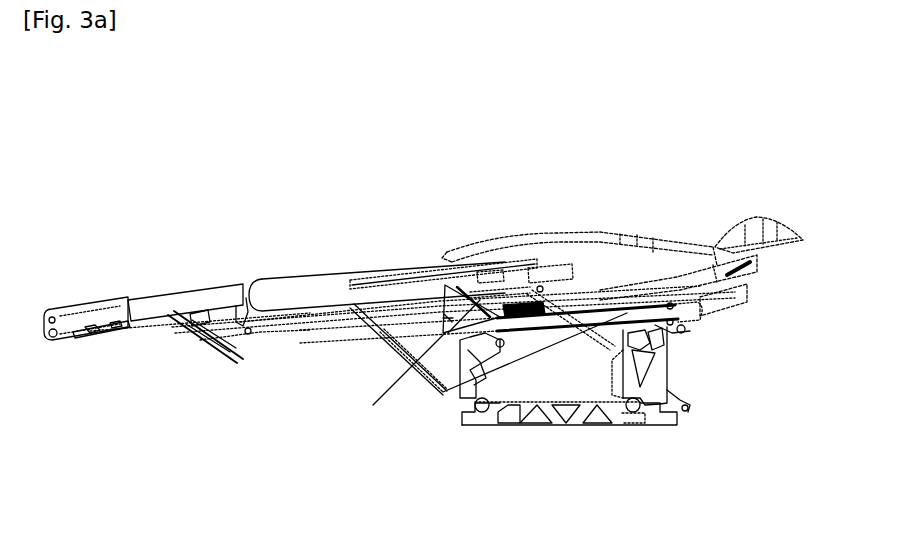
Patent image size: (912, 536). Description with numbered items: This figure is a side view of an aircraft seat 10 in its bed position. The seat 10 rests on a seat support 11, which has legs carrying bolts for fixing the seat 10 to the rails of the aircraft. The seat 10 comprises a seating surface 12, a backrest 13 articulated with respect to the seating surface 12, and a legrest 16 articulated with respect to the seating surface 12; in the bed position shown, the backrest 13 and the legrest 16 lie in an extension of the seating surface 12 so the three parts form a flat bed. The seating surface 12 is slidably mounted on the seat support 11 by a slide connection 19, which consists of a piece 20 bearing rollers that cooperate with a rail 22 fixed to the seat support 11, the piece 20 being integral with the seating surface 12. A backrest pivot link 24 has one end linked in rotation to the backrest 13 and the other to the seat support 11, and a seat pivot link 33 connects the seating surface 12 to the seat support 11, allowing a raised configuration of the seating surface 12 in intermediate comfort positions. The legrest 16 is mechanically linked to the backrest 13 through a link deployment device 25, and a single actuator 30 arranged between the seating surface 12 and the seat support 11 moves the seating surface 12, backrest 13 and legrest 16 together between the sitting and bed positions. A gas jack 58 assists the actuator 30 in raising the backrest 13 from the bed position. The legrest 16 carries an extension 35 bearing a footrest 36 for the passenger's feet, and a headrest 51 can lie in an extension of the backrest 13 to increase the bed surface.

The seat 10 is at (558, 190).
The seat support 11 is at (638, 365).
The seating surface 12 is at (300, 293).
The backrest 13 is at (595, 260).
The legrest 16 is at (171, 305).
The slide connection 19 is at (373, 405).
The piece 20 is at (455, 330).
The rail 22 is at (680, 342).
The backrest pivot link 24 is at (597, 353).
The link deployment device 25 is at (242, 322).
The single actuator 30 is at (514, 330).
The seat pivot link 33 is at (384, 337).
The extension 35 is at (106, 330).
The footrest 36 is at (82, 308).
The headrest 51 is at (778, 237).
The gas jack 58 is at (512, 365).